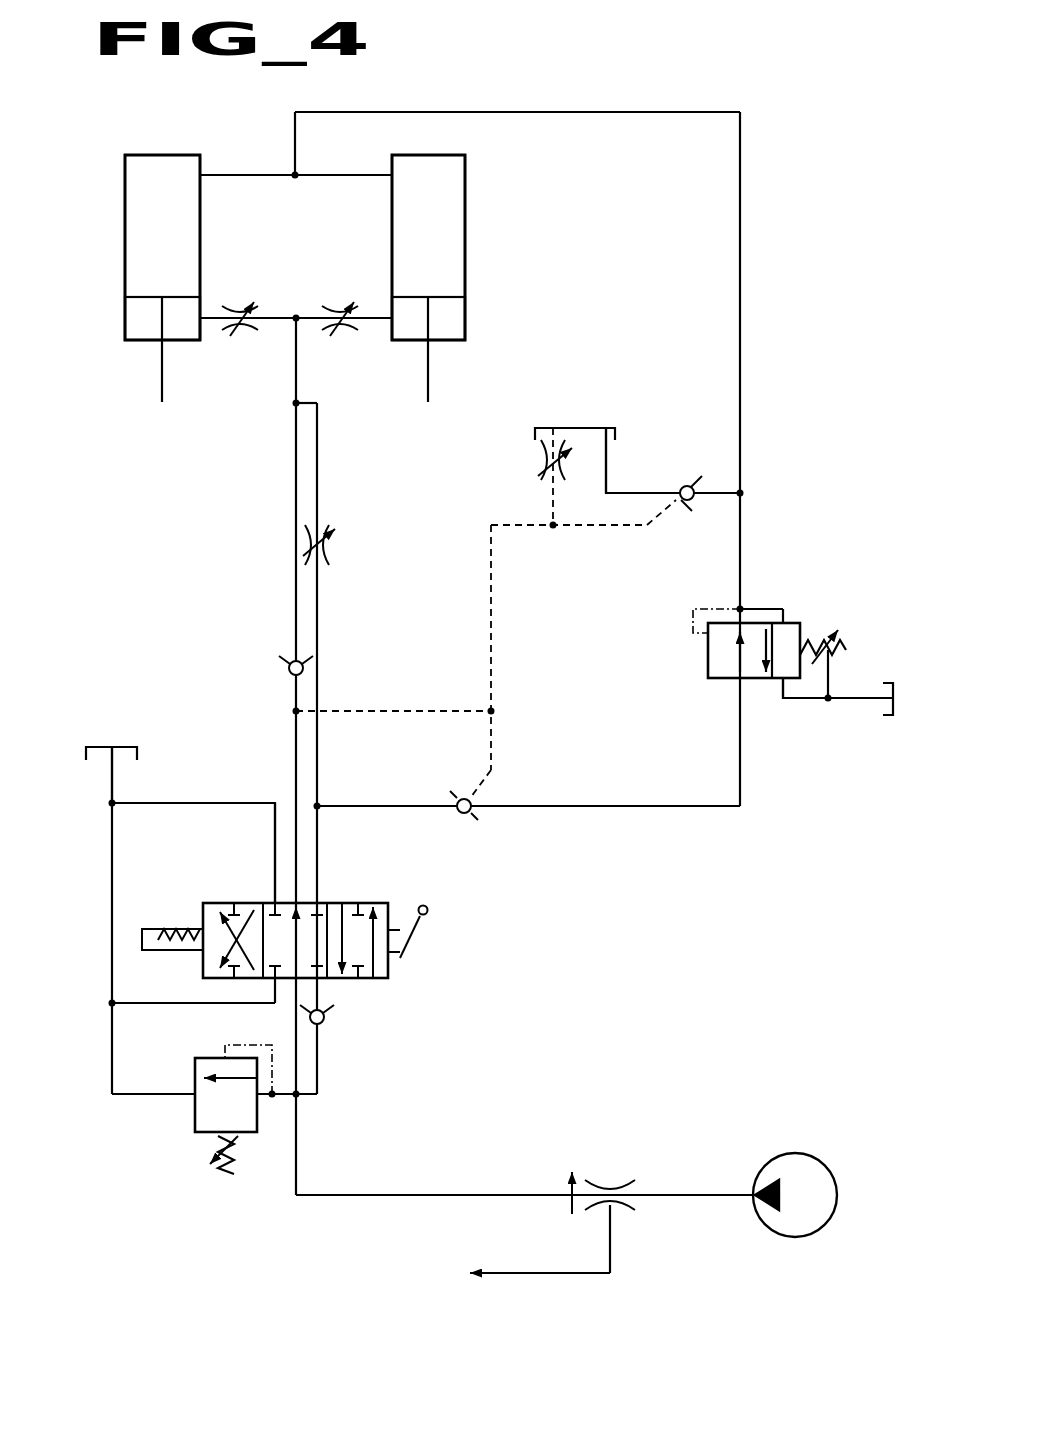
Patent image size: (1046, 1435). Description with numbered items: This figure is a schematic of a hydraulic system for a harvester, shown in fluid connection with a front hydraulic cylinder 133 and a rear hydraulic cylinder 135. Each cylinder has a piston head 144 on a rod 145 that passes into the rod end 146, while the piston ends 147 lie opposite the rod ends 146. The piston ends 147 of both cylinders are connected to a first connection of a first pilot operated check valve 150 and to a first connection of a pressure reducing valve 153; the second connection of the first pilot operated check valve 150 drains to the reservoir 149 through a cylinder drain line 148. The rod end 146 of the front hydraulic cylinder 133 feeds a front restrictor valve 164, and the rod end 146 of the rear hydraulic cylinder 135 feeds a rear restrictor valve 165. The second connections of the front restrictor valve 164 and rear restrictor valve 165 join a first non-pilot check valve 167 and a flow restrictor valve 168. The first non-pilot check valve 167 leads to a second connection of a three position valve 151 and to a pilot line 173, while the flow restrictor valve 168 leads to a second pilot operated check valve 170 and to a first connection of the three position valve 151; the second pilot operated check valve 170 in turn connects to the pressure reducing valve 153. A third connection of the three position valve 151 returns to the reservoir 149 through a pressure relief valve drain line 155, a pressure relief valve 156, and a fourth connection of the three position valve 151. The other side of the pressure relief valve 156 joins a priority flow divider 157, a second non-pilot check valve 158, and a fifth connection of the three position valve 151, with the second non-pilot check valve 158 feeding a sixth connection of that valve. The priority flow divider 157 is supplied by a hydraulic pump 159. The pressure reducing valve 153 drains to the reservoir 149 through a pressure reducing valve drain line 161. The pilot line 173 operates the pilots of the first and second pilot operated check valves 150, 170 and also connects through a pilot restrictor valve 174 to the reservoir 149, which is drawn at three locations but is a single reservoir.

The front hydraulic cylinder 133 is at (116, 178).
The rear hydraulic cylinder 135 is at (478, 192).
The piston end 147 is at (160, 155).
The piston head 144 is at (137, 297).
The rod end 146 is at (134, 342).
The rod 145 is at (160, 392).
The front restrictor valve 164 is at (250, 305).
The rear restrictor valve 165 is at (343, 305).
The reservoir 149 is at (560, 428).
The cylinder drain line 148 is at (627, 493).
The pilot restrictor valve 174 is at (540, 470).
The first pilot operated check valve 150 is at (688, 508).
The flow restrictor valve 168 is at (343, 554).
The first non-pilot check valve 167 is at (286, 671).
The pilot line 173 is at (367, 711).
The second pilot operated check valve 170 is at (460, 797).
The pressure reducing valve 153 is at (760, 680).
The pressure reducing valve drain line 161 is at (848, 698).
The pressure relief valve drain line 155 is at (112, 783).
The three position valve 151 is at (368, 978).
The second non-pilot check valve 158 is at (330, 1022).
The pressure relief valve 156 is at (195, 1118).
The priority flow divider 157 is at (615, 1208).
The hydraulic pump 159 is at (795, 1153).